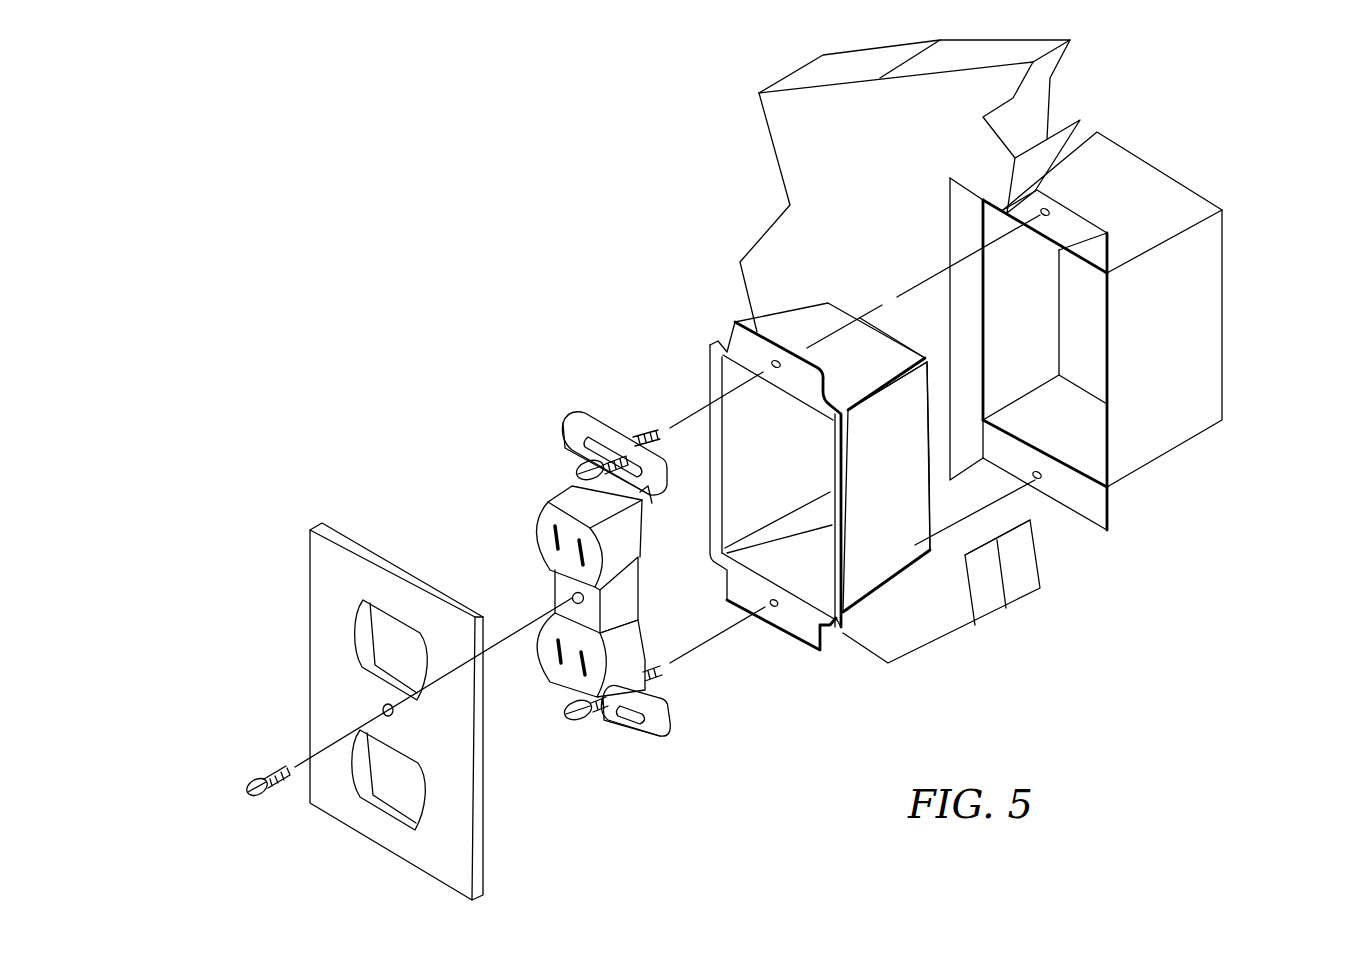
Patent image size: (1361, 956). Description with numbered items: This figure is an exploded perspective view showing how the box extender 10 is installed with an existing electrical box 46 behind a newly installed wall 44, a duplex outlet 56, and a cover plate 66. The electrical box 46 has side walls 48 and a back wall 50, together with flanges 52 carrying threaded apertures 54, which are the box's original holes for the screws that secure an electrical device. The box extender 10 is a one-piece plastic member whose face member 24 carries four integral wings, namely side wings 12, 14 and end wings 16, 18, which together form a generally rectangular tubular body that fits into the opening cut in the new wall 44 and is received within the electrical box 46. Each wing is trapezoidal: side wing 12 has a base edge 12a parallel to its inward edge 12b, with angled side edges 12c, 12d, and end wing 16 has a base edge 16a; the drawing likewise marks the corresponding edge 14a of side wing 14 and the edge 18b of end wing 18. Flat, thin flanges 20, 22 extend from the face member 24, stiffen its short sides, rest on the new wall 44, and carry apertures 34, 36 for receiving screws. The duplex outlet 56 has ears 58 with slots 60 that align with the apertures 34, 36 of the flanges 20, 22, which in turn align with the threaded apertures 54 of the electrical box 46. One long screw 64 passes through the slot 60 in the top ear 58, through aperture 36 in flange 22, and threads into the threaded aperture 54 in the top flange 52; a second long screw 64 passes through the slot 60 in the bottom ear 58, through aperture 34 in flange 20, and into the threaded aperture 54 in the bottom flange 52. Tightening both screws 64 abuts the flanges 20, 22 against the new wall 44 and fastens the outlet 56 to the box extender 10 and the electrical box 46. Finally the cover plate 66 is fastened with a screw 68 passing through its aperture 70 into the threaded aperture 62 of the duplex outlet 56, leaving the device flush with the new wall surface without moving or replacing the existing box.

The box extender 10 is at (672, 312).
The side wing 12 is at (871, 500).
The base edge 12a is at (928, 500).
The inward edge 12b is at (928, 443).
The side plate bottom edge 12c is at (915, 550).
The side plate top edge 12d is at (903, 397).
The side wing 14 is at (772, 456).
The front plate flange 14a is at (723, 482).
The end wing 16 is at (796, 590).
The base edge 16a is at (753, 555).
The end wing 18 is at (838, 368).
The top flange edge 18b is at (882, 328).
The end flange 20 is at (739, 601).
The end flange 22 is at (734, 365).
The face member 24 is at (835, 615).
The aperture 34 is at (772, 610).
The aperture 36 is at (781, 362).
The newly installed wall 44 is at (879, 146).
The existing electrical box 46 is at (1266, 241).
The side walls 48 is at (1143, 219).
The back wall 50 is at (1071, 354).
The flanges 52 is at (1090, 247).
The threaded apertures 54 is at (1049, 210).
The duplex outlet 56 is at (510, 480).
The ears 58 is at (647, 506).
The slots 60 is at (582, 447).
The threaded aperture 62 is at (572, 595).
The long screws 64 is at (577, 470).
The cover plate 66 is at (425, 731).
The screw 68 is at (252, 773).
The aperture 70 is at (385, 705).